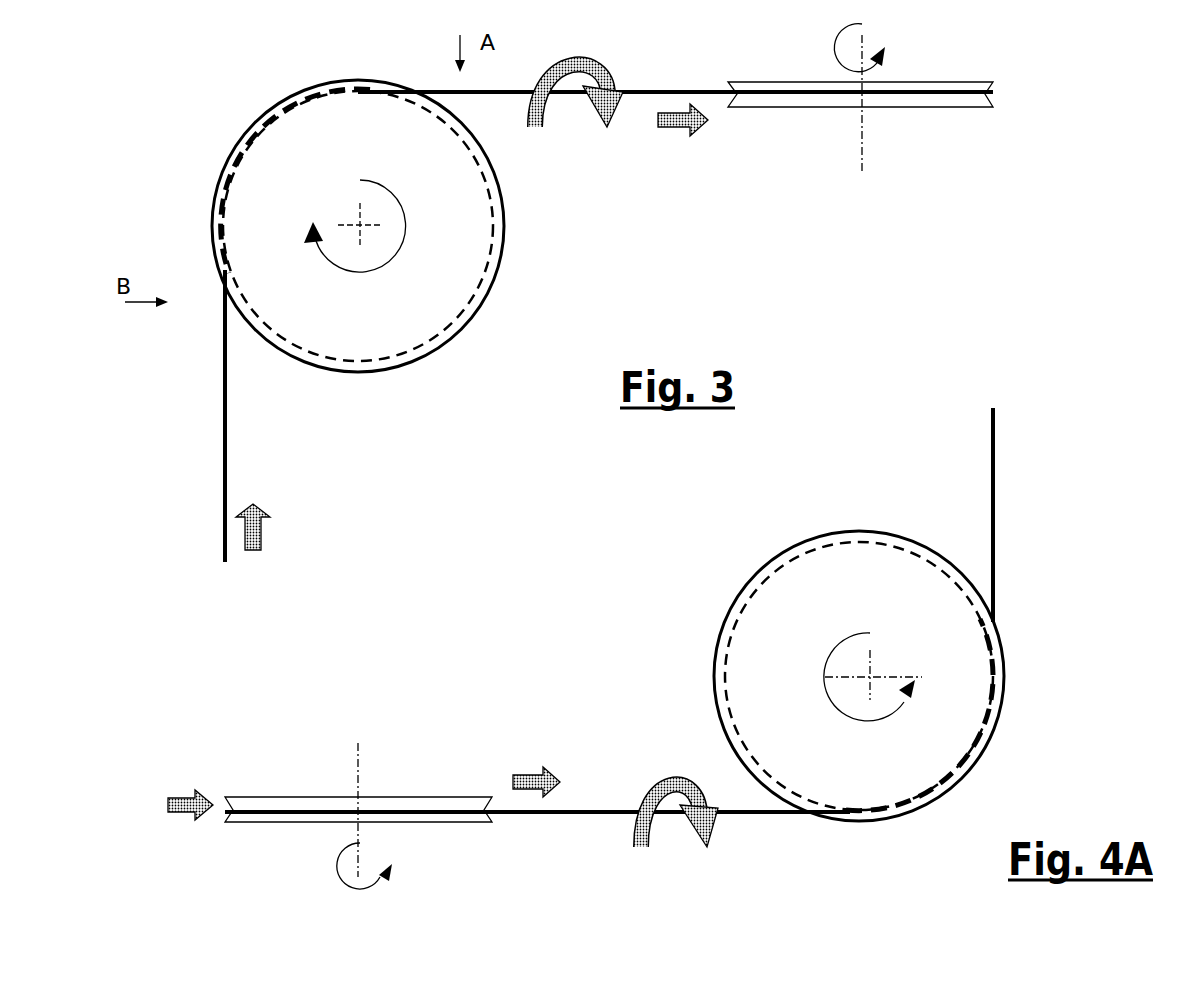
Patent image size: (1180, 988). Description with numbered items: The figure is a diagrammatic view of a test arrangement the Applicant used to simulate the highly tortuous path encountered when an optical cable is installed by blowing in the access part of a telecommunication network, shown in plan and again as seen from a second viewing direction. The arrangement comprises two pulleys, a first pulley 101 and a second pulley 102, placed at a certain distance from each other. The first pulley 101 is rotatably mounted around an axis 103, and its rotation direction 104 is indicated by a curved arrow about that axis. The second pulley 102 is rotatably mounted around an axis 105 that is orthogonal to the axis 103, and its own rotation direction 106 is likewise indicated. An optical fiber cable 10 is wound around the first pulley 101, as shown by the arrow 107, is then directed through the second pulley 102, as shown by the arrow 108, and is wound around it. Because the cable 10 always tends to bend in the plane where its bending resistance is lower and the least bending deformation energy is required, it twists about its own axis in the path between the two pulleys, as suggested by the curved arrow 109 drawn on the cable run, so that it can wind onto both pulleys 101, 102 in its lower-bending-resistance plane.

In FIG. 3, the optical fiber cable 10 is at (225, 432).
In FIG. 4A, the optical fiber cable 10 is at (527, 814).
In FIG. 3, the first pulley 101 is at (431, 353).
In FIG. 4A, the first pulley 101 is at (258, 822).
In FIG. 3, the second pulley 102 is at (805, 107).
In FIG. 4A, the second pulley 102 is at (725, 730).
In FIG. 3, the axis 103 is at (345, 222).
In FIG. 4A, the axis 103 is at (337, 809).
In FIG. 3, the rotation direction 104 is at (346, 230).
In FIG. 4A, the rotation direction 104 is at (342, 866).
In FIG. 3, the axis 105 is at (863, 113).
In FIG. 4A, the axis 105 is at (873, 668).
In FIG. 3, the rotation direction 106 is at (875, 48).
In FIG. 4A, the rotation direction 106 is at (860, 682).
In FIG. 3, the arrow 107 is at (274, 527).
In FIG. 4A, the arrow 107 is at (171, 807).
In FIG. 3, the arrow 108 is at (676, 132).
In FIG. 4A, the arrow 108 is at (529, 770).
In FIG. 3, the web twisting direction arrow 109 is at (579, 107).
In FIG. 4A, the web twisting direction arrow 109 is at (679, 827).